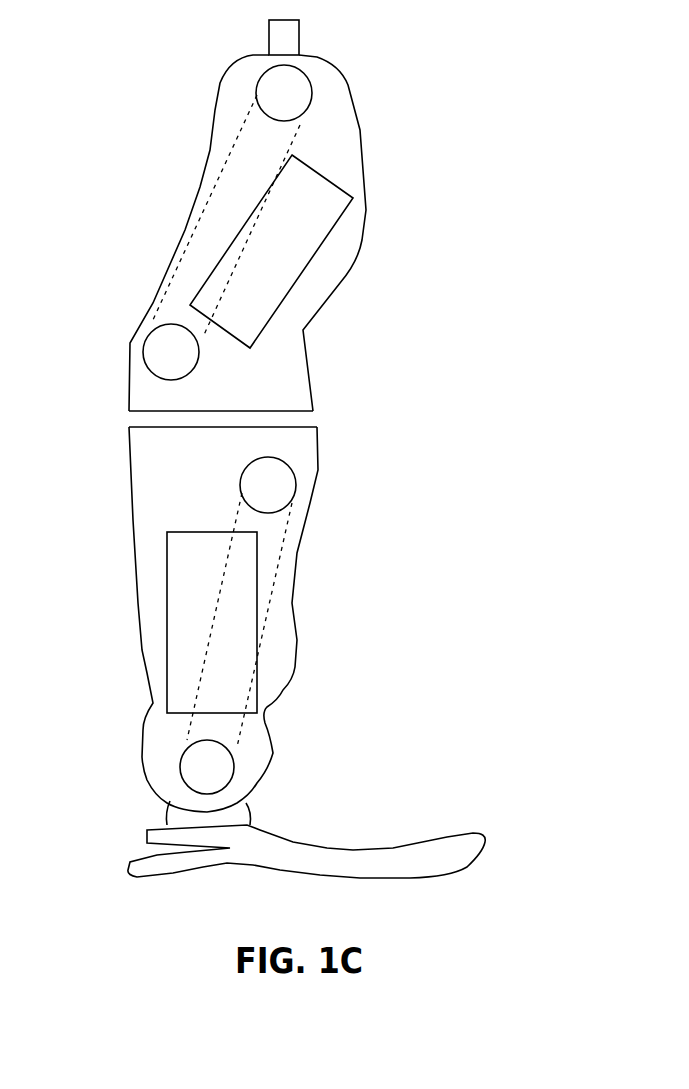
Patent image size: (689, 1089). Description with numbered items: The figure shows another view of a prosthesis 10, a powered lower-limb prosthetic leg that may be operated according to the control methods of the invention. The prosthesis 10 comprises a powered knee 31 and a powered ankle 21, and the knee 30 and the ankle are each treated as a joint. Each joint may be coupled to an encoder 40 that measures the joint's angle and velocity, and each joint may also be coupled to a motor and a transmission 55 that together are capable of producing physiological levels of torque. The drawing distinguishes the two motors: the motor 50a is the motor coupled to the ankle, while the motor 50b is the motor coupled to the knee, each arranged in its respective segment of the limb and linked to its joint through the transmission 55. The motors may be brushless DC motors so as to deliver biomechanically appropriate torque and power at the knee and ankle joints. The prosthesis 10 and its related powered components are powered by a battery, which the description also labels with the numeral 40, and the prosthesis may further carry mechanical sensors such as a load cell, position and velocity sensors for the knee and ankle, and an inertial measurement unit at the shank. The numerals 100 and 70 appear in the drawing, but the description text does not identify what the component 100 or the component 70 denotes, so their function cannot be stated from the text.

The prosthesis 10 is at (470, 52).
The knee 30 is at (380, 64).
The powered knee 31 is at (388, 138).
The encoder 40 is at (400, 196).
The motor coupled to the ankle 50a is at (348, 462).
The motor coupled to the knee 50b is at (100, 357).
The transmission 55 is at (150, 217).
The control unit 100 is at (158, 608).
The powered ankle 21 is at (303, 757).
The foot 70 is at (153, 827).